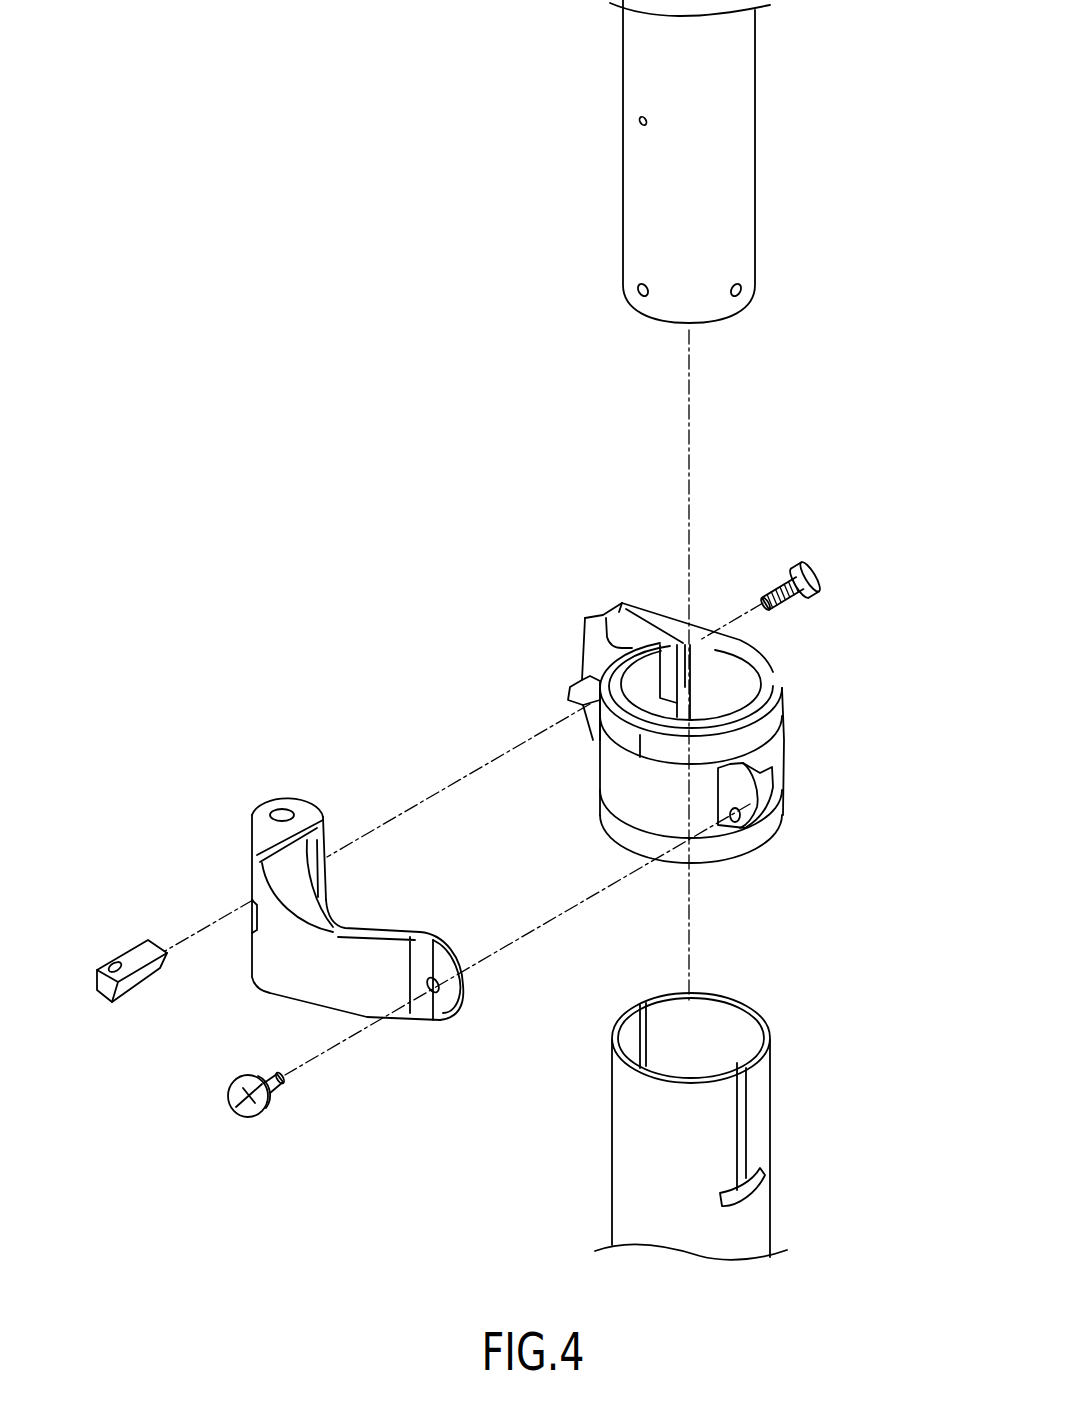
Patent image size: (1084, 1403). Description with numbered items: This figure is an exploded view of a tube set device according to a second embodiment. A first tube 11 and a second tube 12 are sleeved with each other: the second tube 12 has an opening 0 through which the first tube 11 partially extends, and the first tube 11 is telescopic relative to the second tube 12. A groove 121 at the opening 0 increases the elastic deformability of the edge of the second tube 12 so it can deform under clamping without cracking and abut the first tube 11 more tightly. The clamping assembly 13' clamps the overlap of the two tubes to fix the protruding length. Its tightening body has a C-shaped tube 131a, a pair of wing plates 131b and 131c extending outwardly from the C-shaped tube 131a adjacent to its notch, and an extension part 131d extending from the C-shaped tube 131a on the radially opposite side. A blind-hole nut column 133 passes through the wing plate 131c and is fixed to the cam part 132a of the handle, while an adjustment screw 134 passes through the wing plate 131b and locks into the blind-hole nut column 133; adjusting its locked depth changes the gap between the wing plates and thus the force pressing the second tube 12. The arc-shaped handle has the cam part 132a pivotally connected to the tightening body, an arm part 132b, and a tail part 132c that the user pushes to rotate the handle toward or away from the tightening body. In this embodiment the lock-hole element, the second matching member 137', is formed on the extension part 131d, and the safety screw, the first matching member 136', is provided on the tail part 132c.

The first tube 11 is at (742, 167).
The second tube 12 is at (710, 1108).
The groove 121 is at (738, 1132).
The connecting assembly 13' is at (730, 702).
The C-shaped tube 131a is at (763, 666).
The wing plate 131b is at (650, 610).
The wing plate 131c is at (607, 625).
The extension part 131d is at (792, 840).
The cam part 132a is at (265, 820).
The arm part 132b is at (284, 979).
The tail part 132c is at (422, 1015).
The blind-hole nut column 133 is at (140, 950).
The adjustment screw 134 is at (803, 565).
The first matching member 136' is at (221, 1102).
The second matching member 137' is at (751, 862).
The opening 0 is at (718, 1033).